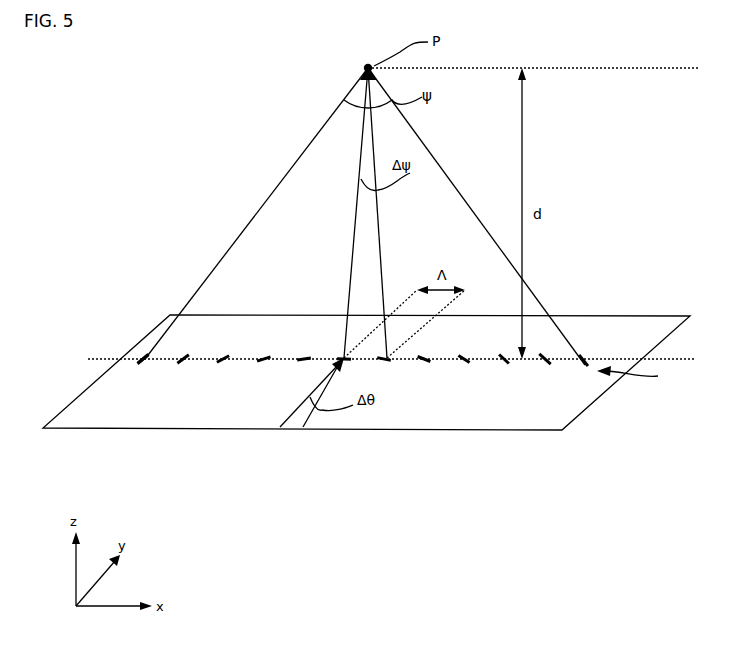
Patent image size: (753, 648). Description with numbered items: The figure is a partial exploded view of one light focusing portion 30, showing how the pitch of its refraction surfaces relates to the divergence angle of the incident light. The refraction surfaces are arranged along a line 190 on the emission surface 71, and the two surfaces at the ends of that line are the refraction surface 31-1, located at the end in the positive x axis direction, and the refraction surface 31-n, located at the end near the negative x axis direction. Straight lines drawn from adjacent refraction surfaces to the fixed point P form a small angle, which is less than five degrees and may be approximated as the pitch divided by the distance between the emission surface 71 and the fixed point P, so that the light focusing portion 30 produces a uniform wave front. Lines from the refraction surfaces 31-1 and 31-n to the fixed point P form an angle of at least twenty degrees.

The line 190 is at (372, 360).
The refraction surface 31-n is at (147, 360).
The refraction surface 31-1 is at (578, 354).
The emission surface 71 is at (630, 316).
The light focusing portion 30 is at (636, 375).